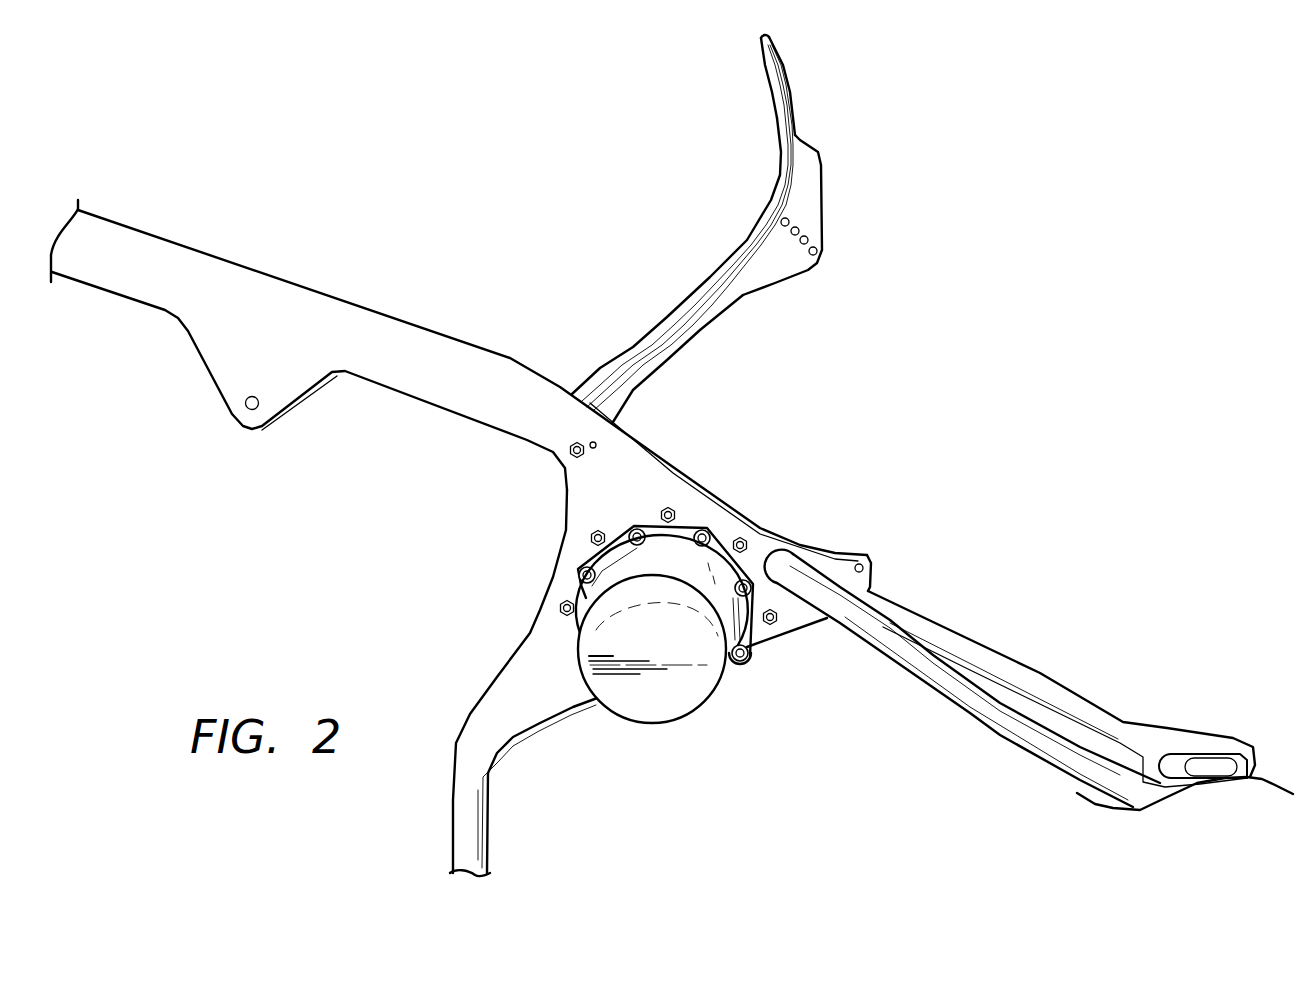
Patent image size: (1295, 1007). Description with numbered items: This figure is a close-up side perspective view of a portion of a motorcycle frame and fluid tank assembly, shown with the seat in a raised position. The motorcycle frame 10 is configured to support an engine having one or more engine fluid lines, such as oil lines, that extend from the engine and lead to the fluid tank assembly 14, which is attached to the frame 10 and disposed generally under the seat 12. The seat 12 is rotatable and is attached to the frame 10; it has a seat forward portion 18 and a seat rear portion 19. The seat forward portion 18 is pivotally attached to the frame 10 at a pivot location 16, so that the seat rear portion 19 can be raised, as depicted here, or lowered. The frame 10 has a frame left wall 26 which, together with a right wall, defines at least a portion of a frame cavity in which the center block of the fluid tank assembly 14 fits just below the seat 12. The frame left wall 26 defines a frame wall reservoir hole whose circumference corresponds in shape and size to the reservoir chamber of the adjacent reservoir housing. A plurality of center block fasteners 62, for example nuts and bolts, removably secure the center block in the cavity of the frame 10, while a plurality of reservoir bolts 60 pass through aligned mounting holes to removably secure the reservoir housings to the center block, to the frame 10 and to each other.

The motorcycle frame 10 is at (459, 375).
The seat 12 is at (772, 212).
The fluid tank assembly 14 is at (668, 644).
The pivot location 16 is at (525, 667).
The seat forward portion 18 is at (615, 396).
The seat rear portion 19 is at (736, 73).
The frame left wall 26 is at (698, 503).
The reservoir bolts 60 is at (783, 682).
The center block fasteners 62 is at (923, 542).